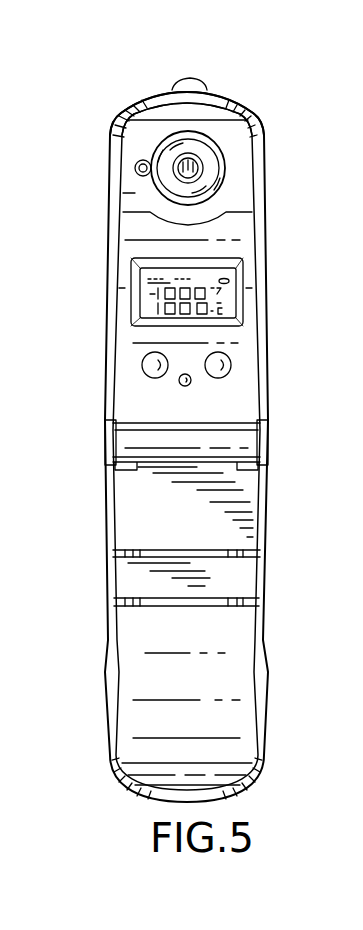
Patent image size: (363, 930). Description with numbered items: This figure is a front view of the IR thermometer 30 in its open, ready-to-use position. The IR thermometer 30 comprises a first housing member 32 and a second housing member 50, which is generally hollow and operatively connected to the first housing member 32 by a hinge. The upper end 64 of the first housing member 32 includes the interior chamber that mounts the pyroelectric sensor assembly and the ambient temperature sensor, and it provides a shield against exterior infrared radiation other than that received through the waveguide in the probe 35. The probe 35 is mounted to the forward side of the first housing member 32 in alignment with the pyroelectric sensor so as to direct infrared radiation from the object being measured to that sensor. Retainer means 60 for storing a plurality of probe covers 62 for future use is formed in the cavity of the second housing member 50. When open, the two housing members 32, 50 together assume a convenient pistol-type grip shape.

The IR thermometer 30 is at (186, 440).
The first housing member 32 is at (237, 100).
The probe 35 is at (200, 164).
The second housing member 50 is at (270, 550).
The retainer means 60 is at (118, 548).
The probe covers 62 is at (220, 197).
The upper end 64 is at (148, 97).